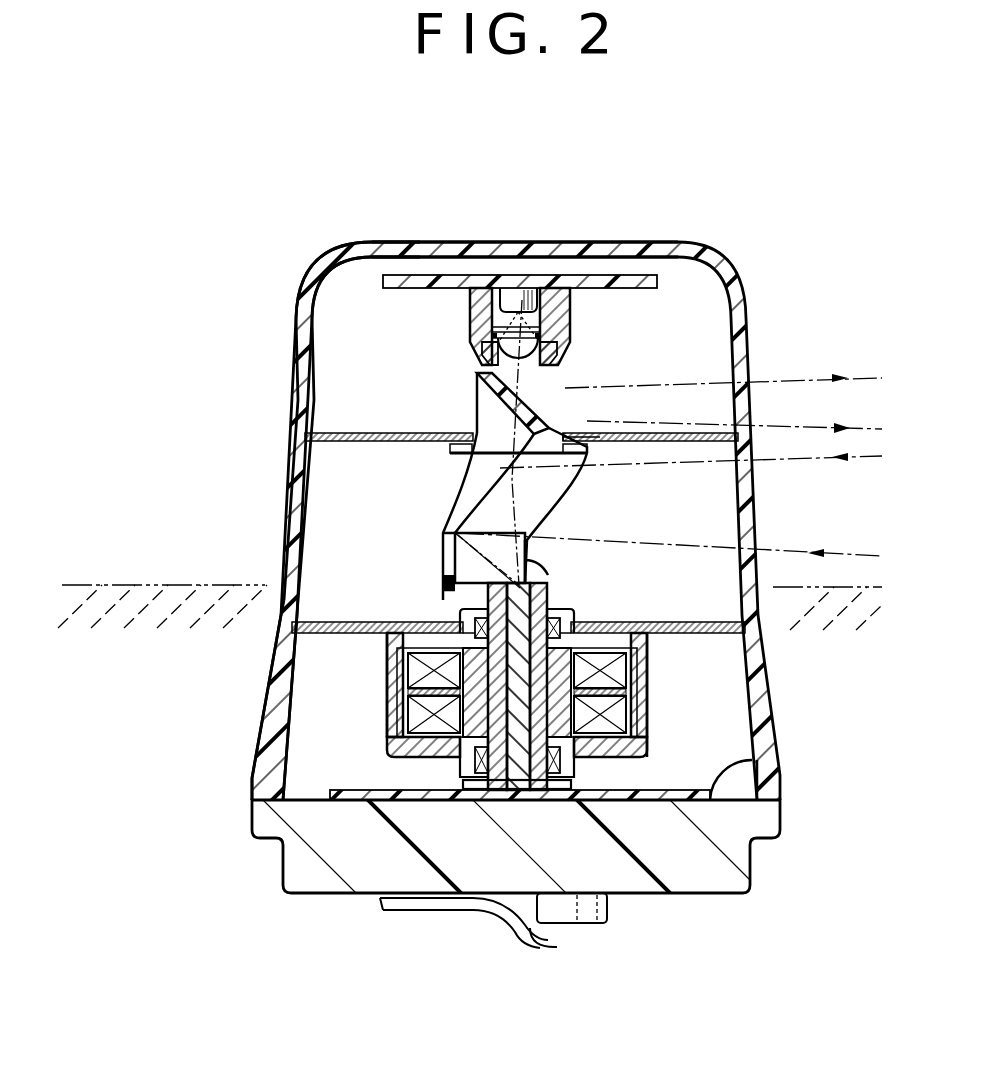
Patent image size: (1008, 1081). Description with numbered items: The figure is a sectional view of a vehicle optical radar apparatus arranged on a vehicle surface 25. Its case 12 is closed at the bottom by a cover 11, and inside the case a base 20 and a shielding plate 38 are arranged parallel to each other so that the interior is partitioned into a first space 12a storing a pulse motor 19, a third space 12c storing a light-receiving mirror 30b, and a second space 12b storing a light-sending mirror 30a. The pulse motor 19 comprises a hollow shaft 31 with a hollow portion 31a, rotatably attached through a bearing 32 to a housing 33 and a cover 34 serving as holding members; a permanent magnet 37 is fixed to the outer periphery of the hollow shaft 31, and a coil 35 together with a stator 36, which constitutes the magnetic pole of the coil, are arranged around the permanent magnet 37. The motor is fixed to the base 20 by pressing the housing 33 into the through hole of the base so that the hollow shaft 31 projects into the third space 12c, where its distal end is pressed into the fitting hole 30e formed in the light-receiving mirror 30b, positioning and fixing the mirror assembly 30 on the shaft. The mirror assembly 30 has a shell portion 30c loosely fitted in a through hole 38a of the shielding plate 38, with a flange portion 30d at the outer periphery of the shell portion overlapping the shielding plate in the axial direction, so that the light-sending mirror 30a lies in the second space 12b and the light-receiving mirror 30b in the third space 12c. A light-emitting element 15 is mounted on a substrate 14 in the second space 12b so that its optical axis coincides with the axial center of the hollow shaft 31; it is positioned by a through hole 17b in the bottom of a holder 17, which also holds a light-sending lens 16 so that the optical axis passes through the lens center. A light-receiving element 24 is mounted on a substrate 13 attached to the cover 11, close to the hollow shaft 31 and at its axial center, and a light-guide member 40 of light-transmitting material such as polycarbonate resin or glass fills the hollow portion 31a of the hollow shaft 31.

The cover 11 is at (753, 866).
The case 12 is at (766, 782).
The first space 12a is at (312, 692).
The second space 12b is at (337, 333).
The third space 12c is at (322, 468).
The substrate 13 is at (782, 770).
The substrate 14 is at (433, 275).
The light-emitting element 15 is at (560, 243).
The light-sending lens 16 is at (490, 337).
The holder 17 is at (470, 307).
The through hole 17b is at (517, 288).
The pulse motor 19 is at (812, 689).
The base 20 is at (333, 622).
The light-receiving element 24 is at (567, 788).
The vehicle surface 25 is at (170, 584).
The mirror assembly 30 is at (440, 513).
The light-sending mirror 30a is at (532, 405).
The light-receiving mirror 30b is at (540, 500).
The shell portion 30c is at (497, 438).
The flange portion 30d is at (450, 450).
The fitting hole 30e is at (540, 578).
The hollow shaft 31 is at (477, 757).
The hollow portion 31a is at (515, 789).
The bearing 32 is at (463, 617).
The housing 33 is at (388, 658).
The cover 34 is at (388, 745).
The coil 35 is at (620, 670).
The stator 36 is at (643, 706).
The permanent magnet 37 is at (643, 727).
The shielding plate 38 is at (323, 432).
The through hole 38a is at (565, 433).
The light-guide member 40 is at (521, 583).